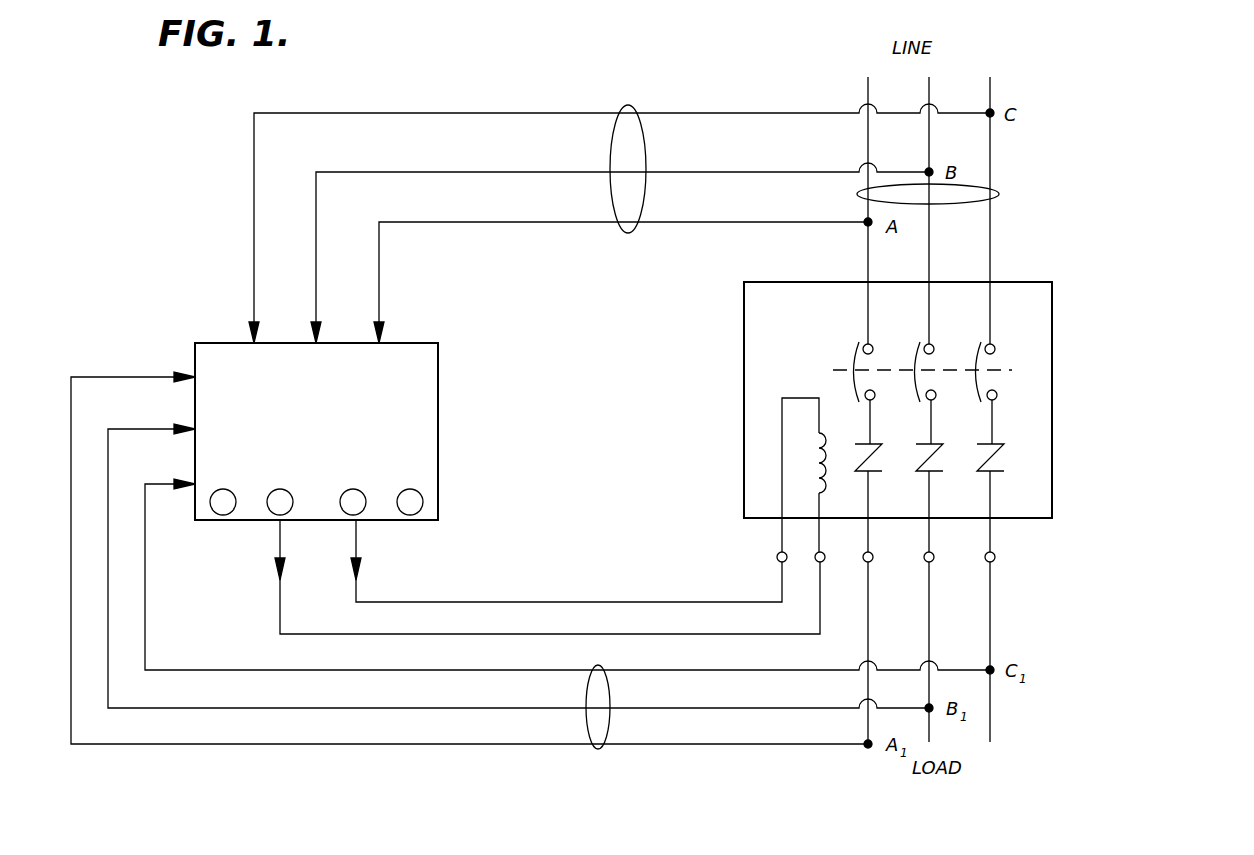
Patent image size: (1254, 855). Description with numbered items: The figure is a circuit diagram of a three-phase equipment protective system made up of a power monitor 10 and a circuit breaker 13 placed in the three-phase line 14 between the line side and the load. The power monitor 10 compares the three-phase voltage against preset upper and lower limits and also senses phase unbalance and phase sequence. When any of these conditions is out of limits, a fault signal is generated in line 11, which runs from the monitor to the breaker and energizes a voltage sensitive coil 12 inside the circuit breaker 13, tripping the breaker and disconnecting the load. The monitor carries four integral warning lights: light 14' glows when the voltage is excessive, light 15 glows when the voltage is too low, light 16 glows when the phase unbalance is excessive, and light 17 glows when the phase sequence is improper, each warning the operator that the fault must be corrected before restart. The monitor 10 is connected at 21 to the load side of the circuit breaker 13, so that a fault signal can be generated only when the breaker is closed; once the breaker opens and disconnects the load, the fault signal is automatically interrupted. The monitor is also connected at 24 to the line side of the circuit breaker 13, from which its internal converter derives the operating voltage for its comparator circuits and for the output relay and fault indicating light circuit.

The power monitor 10 is at (431, 336).
The fault signal line 11 is at (753, 595).
The voltage sensitive coil 12 is at (804, 440).
The circuit breaker 13 is at (740, 497).
The three-phase line 14 is at (955, 175).
The integral warning light 14' is at (447, 514).
The integral warning light 15 is at (214, 511).
The integral warning light 16 is at (271, 511).
The integral warning light 17 is at (344, 511).
The load side connection 21 is at (582, 729).
The line side connection 24 is at (640, 108).